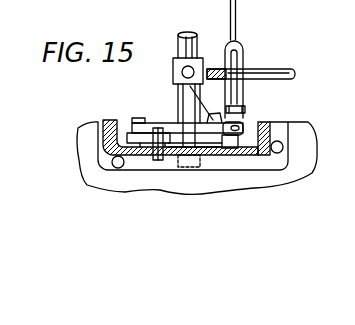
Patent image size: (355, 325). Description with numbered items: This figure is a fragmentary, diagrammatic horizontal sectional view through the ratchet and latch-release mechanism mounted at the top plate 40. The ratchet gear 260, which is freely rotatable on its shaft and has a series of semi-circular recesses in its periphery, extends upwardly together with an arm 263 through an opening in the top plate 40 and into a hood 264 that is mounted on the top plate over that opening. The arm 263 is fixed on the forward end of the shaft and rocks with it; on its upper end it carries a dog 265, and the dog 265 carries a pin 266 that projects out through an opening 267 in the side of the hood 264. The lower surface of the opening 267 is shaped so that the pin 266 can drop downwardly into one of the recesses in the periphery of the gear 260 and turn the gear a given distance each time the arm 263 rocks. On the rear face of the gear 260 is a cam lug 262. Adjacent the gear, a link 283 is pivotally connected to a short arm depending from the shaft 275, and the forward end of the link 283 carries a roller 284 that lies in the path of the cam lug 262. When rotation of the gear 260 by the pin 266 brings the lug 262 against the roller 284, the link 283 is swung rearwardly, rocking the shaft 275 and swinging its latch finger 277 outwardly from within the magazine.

The top plate 40 is at (88, 162).
The ratchet gear 260 is at (177, 125).
The cam lug 262 is at (186, 119).
The arm 263 is at (145, 143).
The hood 264 is at (272, 121).
The dog 265 is at (142, 133).
The pin 266 is at (160, 150).
The opening 267 is at (208, 150).
The shaft 275 is at (268, 68).
The latch finger 277 is at (215, 70).
The link 283 is at (236, 33).
The roller 284 is at (241, 105).